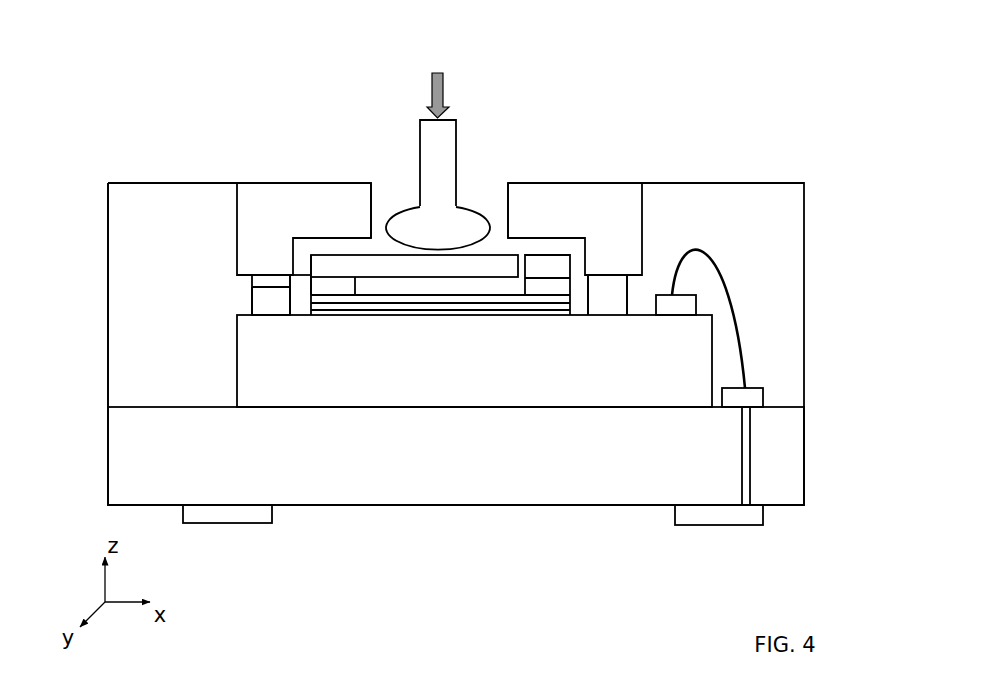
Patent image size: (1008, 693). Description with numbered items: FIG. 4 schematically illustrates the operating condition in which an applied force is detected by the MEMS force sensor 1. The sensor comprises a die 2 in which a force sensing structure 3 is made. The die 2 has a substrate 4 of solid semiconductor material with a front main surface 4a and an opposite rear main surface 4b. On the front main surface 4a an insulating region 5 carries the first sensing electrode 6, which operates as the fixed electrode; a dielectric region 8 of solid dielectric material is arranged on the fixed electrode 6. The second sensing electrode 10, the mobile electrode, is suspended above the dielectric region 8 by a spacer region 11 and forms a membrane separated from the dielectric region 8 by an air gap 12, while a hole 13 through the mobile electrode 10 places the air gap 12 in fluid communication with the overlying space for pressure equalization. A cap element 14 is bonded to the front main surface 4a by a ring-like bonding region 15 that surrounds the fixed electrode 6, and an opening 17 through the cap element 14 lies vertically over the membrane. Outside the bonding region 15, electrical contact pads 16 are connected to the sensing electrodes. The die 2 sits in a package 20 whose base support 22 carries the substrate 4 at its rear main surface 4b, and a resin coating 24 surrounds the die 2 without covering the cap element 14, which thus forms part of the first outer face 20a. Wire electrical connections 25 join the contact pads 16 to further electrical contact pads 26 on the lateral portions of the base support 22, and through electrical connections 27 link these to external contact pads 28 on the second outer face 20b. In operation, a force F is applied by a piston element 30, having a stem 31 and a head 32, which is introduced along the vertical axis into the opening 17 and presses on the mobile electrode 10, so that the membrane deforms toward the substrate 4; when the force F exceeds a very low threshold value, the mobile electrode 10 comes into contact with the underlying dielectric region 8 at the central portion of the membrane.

The MEMS force sensor 1 is at (834, 146).
The die 2 is at (716, 345).
The force sensing structure 3 is at (436, 340).
The substrate 4 is at (612, 392).
The front main surface 4a is at (637, 310).
The rear main surface 4b is at (548, 411).
The insulating region 5 is at (563, 318).
The first sensing electrode 6 is at (303, 283).
The dielectric region 8 is at (471, 304).
The second sensing electrode 10 is at (387, 267).
The spacer region 11 is at (250, 287).
The air gap 12 is at (433, 291).
The hole 13 is at (523, 251).
The cap element 14 is at (284, 192).
The bonding region 15 is at (262, 302).
The electrical contact pads 16 is at (667, 307).
The opening 17 is at (375, 197).
The package 20 is at (810, 355).
The first outer face 20a is at (731, 178).
The second outer face 20b is at (462, 510).
The base support 22 is at (122, 445).
The coating 24 is at (130, 226).
The wire electrical connections 25 is at (725, 272).
The further electrical contact pads 26 is at (752, 400).
The through electrical connections 27 is at (747, 455).
The external contact pads 28 is at (240, 523).
The piston element 30 is at (461, 127).
The stem 31 is at (420, 124).
The head 32 is at (412, 227).
The force F is at (445, 100).